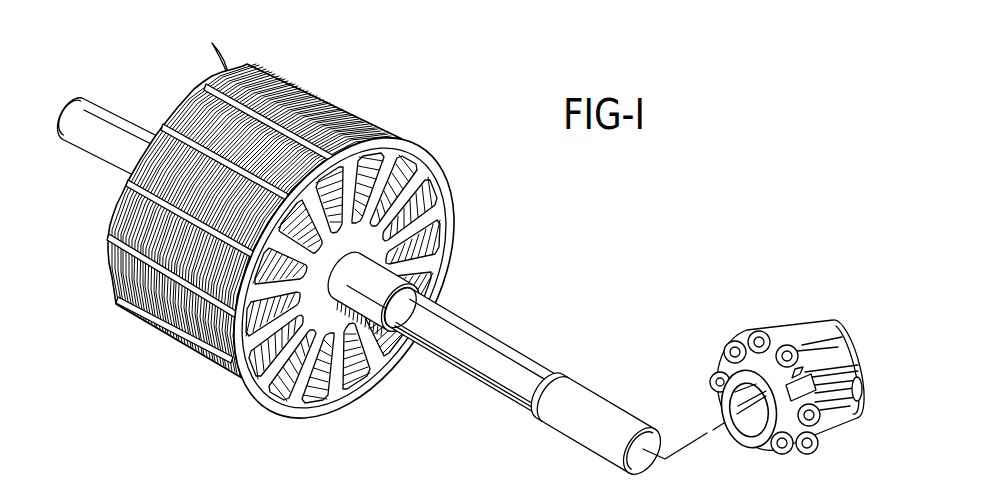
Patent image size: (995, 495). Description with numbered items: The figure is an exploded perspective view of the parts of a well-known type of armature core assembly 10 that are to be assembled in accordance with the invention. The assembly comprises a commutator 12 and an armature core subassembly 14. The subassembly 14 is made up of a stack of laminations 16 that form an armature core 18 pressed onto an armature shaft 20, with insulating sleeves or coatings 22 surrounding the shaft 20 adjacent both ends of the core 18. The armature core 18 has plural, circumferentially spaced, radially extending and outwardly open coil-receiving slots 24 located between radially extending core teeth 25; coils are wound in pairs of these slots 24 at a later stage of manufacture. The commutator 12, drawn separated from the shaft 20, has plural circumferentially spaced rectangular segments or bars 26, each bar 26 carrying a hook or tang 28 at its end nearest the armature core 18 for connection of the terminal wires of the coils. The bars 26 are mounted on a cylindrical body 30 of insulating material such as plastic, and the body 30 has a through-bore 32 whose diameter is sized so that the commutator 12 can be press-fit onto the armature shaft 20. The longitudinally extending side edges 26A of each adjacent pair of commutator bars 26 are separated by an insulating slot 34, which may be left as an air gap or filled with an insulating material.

The armature core assembly 10 is at (645, 318).
The commutator 12 is at (792, 367).
The armature core subassembly 14 is at (360, 105).
The laminations 16 is at (146, 96).
The armature core 18 is at (430, 172).
The armature shaft 20 is at (484, 330).
The insulating sleeves or coatings 22 is at (377, 272).
The coil-receiving slots 24 is at (352, 380).
The core teeth 25 is at (267, 426).
The commutator bars 26 is at (833, 332).
The side edges of commutator bars 26A is at (851, 350).
The hook or tang 28 is at (818, 437).
The cylindrical body 30 is at (745, 436).
The through-bore 32 is at (728, 418).
The insulating slot 34 is at (798, 335).